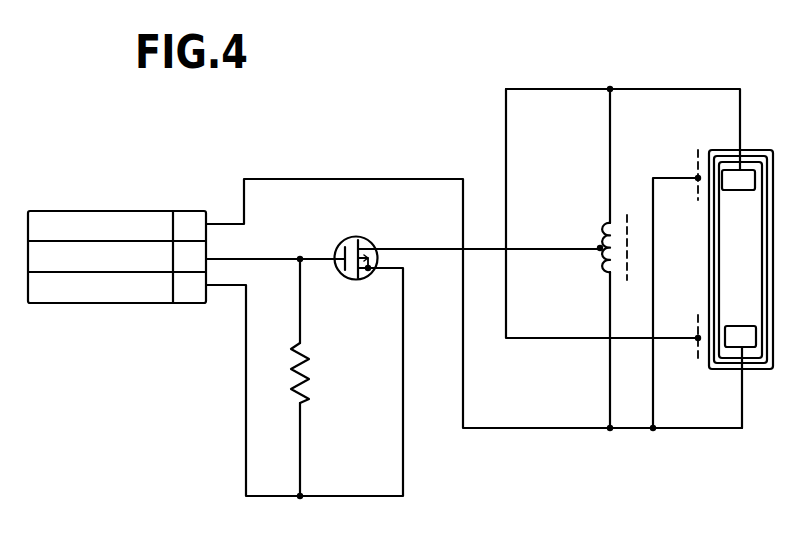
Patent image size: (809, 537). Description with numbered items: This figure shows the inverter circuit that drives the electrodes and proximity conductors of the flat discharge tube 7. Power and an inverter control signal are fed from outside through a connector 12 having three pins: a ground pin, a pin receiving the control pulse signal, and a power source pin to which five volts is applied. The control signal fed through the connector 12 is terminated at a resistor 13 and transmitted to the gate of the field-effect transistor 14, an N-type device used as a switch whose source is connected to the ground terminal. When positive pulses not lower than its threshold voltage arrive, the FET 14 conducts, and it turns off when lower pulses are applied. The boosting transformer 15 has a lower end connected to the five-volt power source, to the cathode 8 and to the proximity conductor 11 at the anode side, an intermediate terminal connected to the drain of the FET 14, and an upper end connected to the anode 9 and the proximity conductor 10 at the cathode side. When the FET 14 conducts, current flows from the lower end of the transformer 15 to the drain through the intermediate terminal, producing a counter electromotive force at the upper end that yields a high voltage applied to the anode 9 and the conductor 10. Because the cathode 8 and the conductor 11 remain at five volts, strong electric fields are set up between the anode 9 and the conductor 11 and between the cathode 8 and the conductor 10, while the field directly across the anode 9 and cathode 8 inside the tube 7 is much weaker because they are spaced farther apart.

The flat discharge tube 7 is at (772, 247).
The cathode 8 is at (746, 340).
The anode 9 is at (745, 178).
The proximity conductor at the cathode side 10 is at (696, 328).
The proximity conductor at the anode side 11 is at (694, 166).
The connector 12 is at (122, 211).
The resistor 13 is at (304, 345).
The field-effect transistor 14 is at (351, 237).
The boosting transformer 15 is at (608, 232).